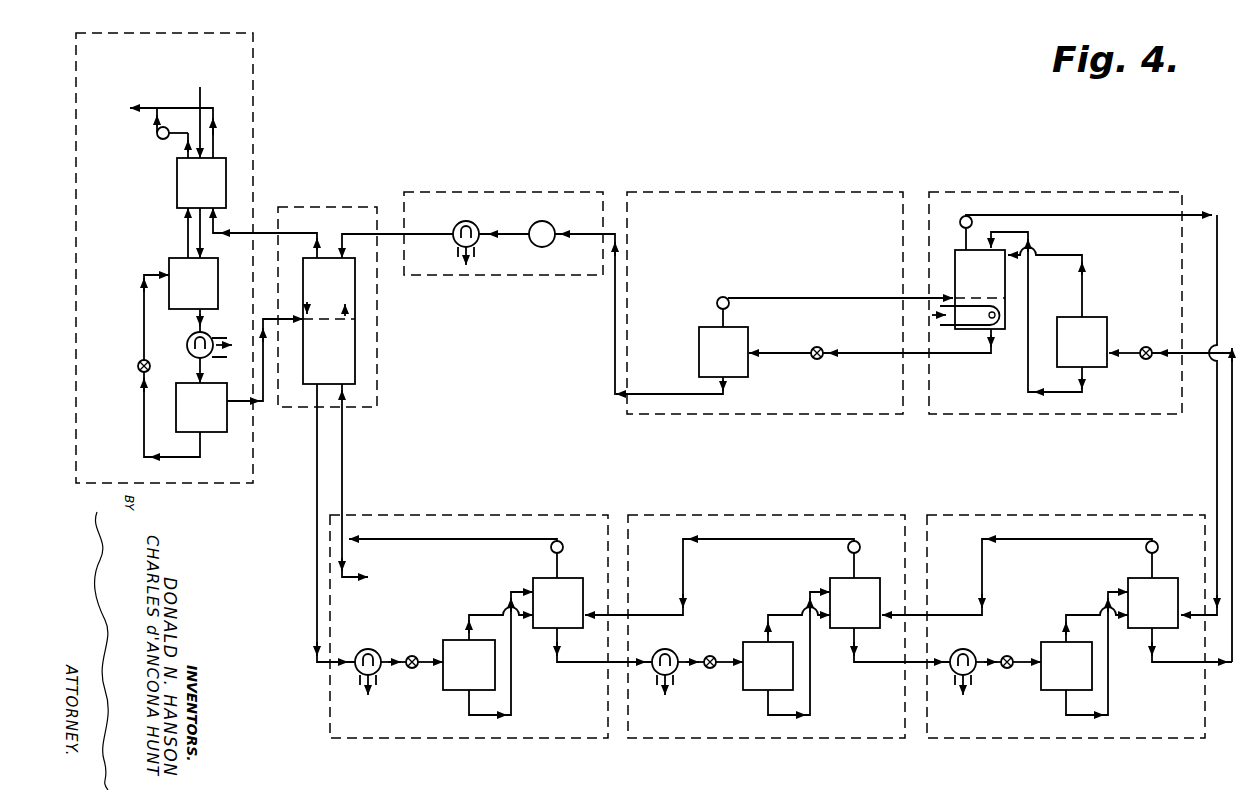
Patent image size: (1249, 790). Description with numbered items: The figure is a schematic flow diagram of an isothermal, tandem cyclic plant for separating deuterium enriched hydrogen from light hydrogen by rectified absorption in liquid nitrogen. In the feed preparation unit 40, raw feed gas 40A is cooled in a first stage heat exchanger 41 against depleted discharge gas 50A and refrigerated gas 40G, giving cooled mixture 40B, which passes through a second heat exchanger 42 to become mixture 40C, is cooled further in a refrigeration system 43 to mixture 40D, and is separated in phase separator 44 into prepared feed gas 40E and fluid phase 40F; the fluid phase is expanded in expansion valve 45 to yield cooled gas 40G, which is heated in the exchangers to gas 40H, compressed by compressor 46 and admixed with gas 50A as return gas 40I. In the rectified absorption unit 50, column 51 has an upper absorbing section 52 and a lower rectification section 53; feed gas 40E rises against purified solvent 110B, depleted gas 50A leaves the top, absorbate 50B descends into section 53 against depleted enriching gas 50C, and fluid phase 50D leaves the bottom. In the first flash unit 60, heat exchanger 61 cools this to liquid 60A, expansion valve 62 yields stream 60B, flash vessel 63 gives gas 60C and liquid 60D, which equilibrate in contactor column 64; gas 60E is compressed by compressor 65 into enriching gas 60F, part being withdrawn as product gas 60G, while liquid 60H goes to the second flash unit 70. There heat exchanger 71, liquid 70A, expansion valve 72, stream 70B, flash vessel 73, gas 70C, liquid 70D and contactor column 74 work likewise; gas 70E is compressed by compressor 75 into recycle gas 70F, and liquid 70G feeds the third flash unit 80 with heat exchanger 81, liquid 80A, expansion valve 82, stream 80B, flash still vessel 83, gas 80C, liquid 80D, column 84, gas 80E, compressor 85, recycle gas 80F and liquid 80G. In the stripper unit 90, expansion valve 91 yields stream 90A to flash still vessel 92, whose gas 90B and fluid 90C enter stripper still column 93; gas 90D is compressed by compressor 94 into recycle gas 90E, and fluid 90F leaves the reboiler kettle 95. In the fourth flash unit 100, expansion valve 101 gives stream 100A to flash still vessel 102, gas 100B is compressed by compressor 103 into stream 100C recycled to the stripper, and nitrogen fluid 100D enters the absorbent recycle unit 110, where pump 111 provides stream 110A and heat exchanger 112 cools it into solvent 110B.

The feed preparation unit 40 is at (253, 110).
The first stage heat exchanger 41 is at (210, 197).
The return gas 40I is at (157, 100).
The compressor 46 is at (155, 137).
The heated gas 40H is at (185, 150).
The raw feed gas 40A is at (201, 98).
The cooled feed gas-solvent mixture 40B is at (201, 240).
The second feed preparation heat exchanger 42 is at (203, 298).
The further cooled mixture 40C is at (198, 318).
The refrigeration system 43 is at (209, 335).
The feed gas-fluid phase mixture 40D is at (197, 366).
The phase separator 44 is at (211, 421).
The prepared feed gas 40E is at (234, 401).
The fluid phase 40F is at (140, 432).
The expansion valve 45 is at (138, 367).
The cooled gas 40G is at (140, 320).
The rectified absorption unit 50 is at (380, 350).
The rectified absorption column 51 is at (360, 348).
The absorbing section 52 is at (338, 298).
The rectification section 53 is at (338, 363).
The depleted discharge gas 50A is at (314, 238).
The depleted enriching gas 50C is at (305, 310).
The absorbate 50B is at (360, 304).
The fluid phase 50D is at (315, 398).
The final product gas 60G is at (346, 580).
The absorbent recycle unit 110 is at (462, 190).
The cooled process stream 110B is at (447, 240).
The heat exchanger 112 is at (470, 222).
The pump 111 is at (548, 248).
The process stream 110A is at (507, 234).
The fourth flash unit 100 is at (833, 122).
The flash still vessel 102 is at (738, 361).
The compressor 103 is at (717, 297).
The process stream 100C is at (858, 298).
The gas phase 100B is at (724, 315).
The expansion valve 101 is at (823, 345).
The process stream 100A is at (793, 360).
The fluid phase 100D is at (694, 394).
The stripper unit 90 is at (1012, 190).
The stripper still column 93 is at (989, 289).
The reboiler kettle 95 is at (977, 330).
The compressor 94 is at (965, 216).
The gas phase 90D is at (966, 236).
The recycle gas 90E is at (1135, 218).
The flash still vessel 92 is at (1091, 352).
The gas phase 90B is at (1085, 268).
The fluid phase 90C is at (1028, 391).
The fluid phase 90F is at (988, 353).
The expansion valve 91 is at (1148, 359).
The process stream 90A is at (1133, 347).
The first flash unit 60 is at (488, 514).
The heat exchanger 61 is at (358, 673).
The cooled liquid 60A is at (389, 660).
The expansion valve 62 is at (410, 656).
The process stream 60B is at (428, 665).
The flash vessel 63 is at (478, 674).
The gas 60C is at (480, 614).
The liquid phase 60D is at (466, 700).
The gas-liquid contactor column 64 is at (567, 612).
The compressor 65 is at (561, 542).
The equilibrated gas phase 60E is at (557, 566).
The enriching gas 60F is at (444, 539).
The liquid phase 60H is at (590, 664).
The second flash unit 70 is at (782, 514).
The heat exchanger 71 is at (655, 673).
The cooled liquid 70A is at (687, 660).
The expansion valve 72 is at (708, 656).
The process stream 70B is at (726, 665).
The flash vessel 73 is at (777, 674).
The gas 70C is at (778, 614).
The liquid phase 70D is at (764, 700).
The gas-liquid contactor column 74 is at (864, 612).
The compressor 75 is at (858, 542).
The equilibrated gas phase 70E is at (854, 566).
The recycle gas 70F is at (741, 539).
The liquid phase 70G is at (887, 664).
The third flash unit 80 is at (1070, 514).
The heat exchanger 81 is at (953, 673).
The cooled liquid 80A is at (985, 660).
The expansion valve 82 is at (1005, 656).
The process stream 80B is at (1024, 665).
The flash still vessel 83 is at (1076, 674).
The gas 80C is at (1076, 614).
The liquid phase 80D is at (1062, 700).
The gas-liquid contactor column 84 is at (1162, 612).
The compressor 85 is at (1156, 542).
The equilibrated gas phase 80E is at (1152, 566).
The recycle gas 80F is at (1075, 539).
The liquid phase 80G is at (1189, 664).